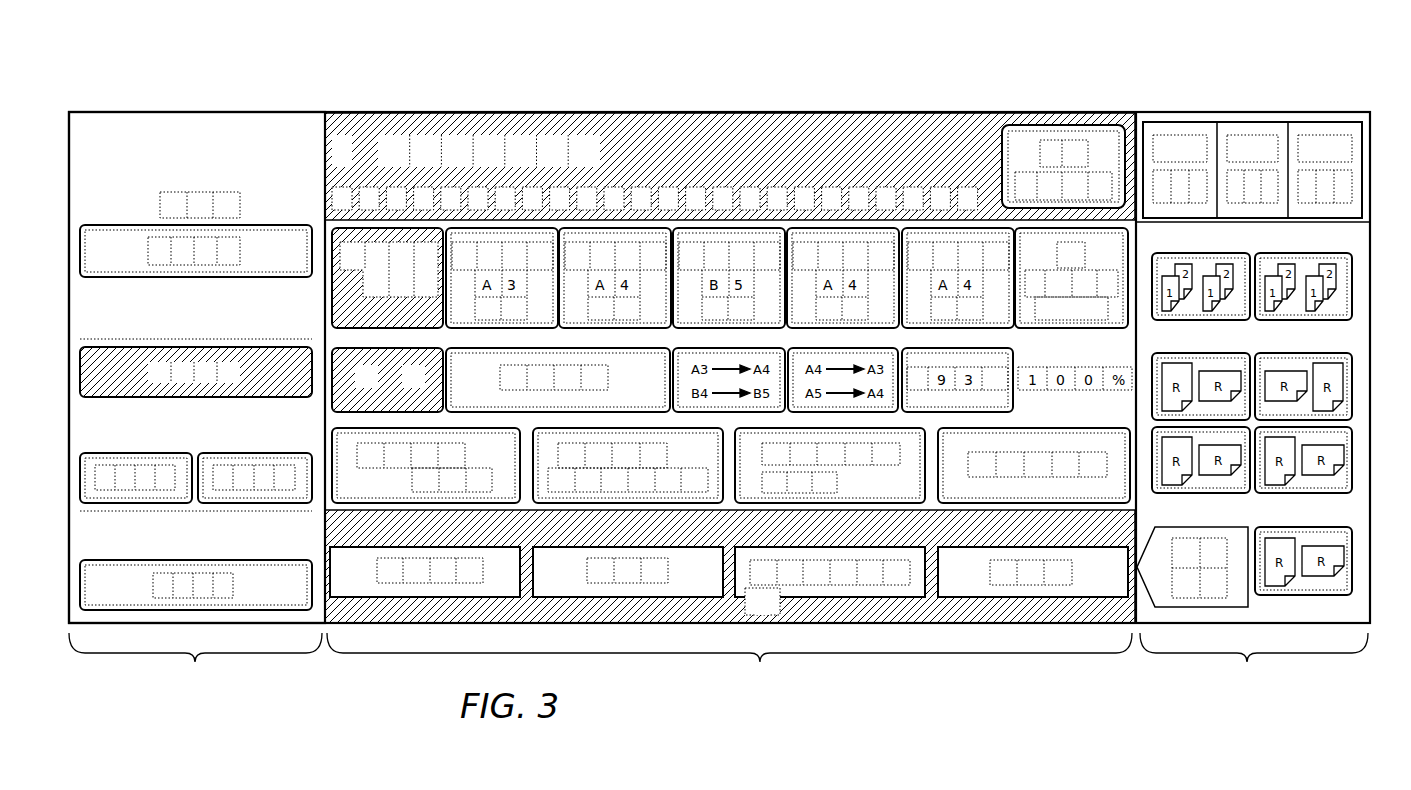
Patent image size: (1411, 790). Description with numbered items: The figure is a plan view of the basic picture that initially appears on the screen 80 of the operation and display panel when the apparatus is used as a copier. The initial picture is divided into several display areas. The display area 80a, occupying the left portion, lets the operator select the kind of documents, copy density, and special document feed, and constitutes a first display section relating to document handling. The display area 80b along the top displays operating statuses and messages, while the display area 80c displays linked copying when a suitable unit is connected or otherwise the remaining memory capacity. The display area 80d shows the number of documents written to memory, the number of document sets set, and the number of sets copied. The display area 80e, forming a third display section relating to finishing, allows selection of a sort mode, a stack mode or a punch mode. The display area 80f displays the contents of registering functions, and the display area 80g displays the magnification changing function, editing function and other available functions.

The screen 80 is at (859, 104).
The display area 80a is at (192, 122).
The display area 80b is at (717, 122).
The display area 80c is at (1062, 130).
The display area 80d is at (1268, 130).
The display area 80e is at (1362, 340).
The display area 80f is at (1092, 504).
The display area 80g is at (702, 623).